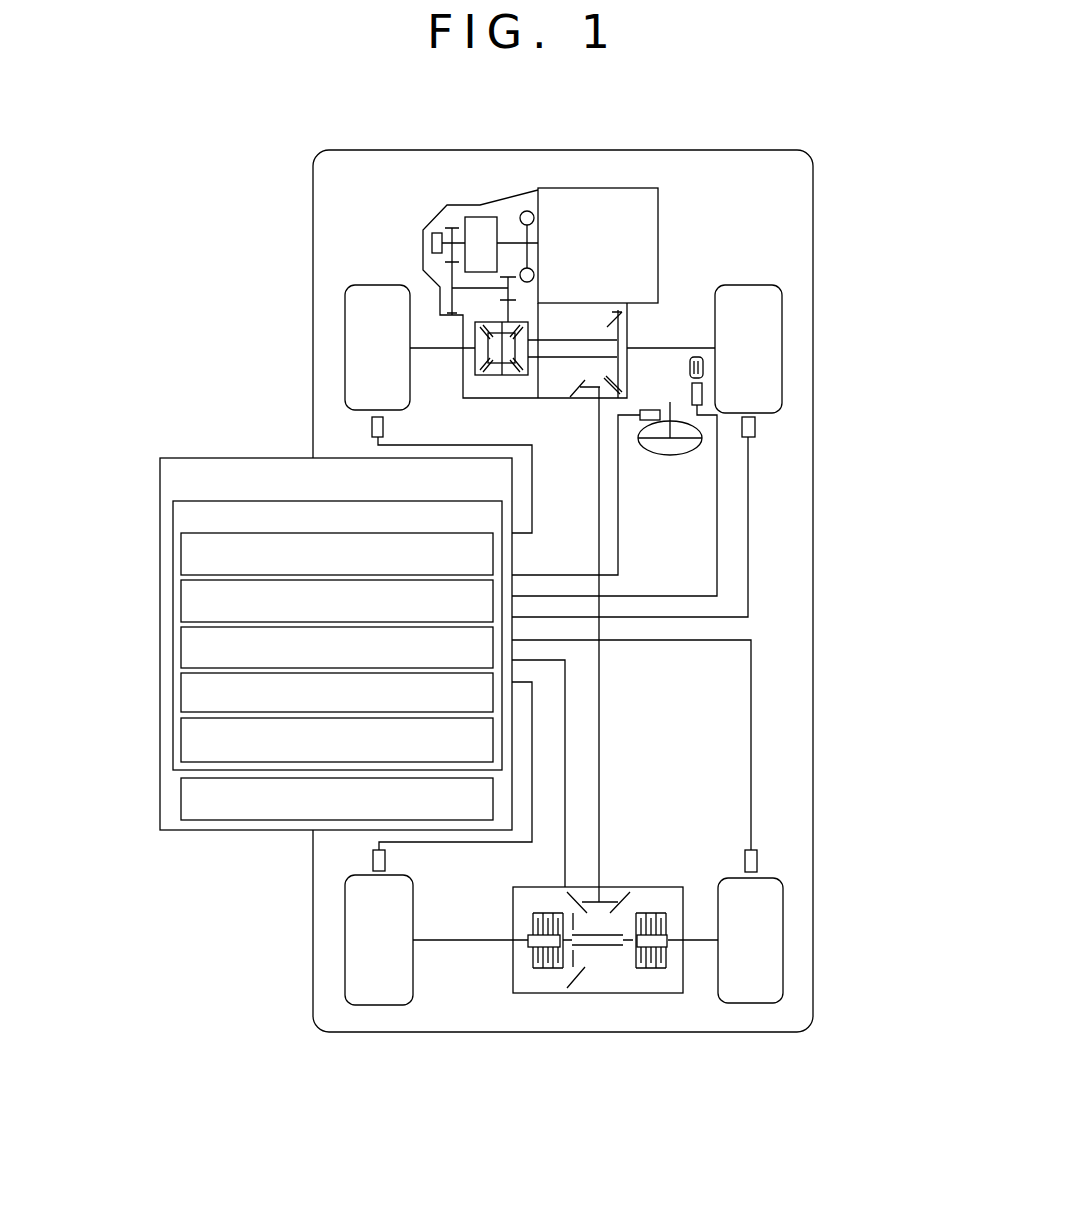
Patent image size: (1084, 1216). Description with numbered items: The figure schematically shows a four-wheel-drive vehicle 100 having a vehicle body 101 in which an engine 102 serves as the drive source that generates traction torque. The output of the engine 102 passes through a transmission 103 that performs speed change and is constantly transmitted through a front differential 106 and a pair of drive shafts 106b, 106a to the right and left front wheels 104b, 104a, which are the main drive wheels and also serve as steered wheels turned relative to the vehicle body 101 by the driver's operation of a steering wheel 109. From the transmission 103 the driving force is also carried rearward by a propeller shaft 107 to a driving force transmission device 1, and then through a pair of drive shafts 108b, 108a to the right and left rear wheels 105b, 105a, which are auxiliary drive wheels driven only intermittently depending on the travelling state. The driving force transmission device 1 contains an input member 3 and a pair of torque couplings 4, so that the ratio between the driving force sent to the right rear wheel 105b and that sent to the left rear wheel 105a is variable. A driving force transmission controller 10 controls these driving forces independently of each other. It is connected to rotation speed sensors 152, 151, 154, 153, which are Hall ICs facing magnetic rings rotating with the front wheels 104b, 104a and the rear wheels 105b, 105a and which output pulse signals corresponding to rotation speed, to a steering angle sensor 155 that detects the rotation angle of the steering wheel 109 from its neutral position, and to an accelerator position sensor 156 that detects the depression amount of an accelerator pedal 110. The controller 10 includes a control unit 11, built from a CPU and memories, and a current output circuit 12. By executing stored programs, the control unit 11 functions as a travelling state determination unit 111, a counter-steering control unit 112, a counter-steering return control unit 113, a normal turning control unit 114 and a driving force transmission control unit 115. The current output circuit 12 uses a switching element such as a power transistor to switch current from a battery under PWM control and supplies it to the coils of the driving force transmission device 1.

The four-wheel-drive vehicle 100 is at (343, 128).
The vehicle body 101 is at (720, 150).
The engine 102 is at (623, 188).
The transmission 103 is at (497, 208).
The left front wheel 104a is at (345, 330).
The right front wheel 104b is at (782, 330).
The left rear wheel 105a is at (345, 940).
The right rear wheel 105b is at (783, 927).
The front differential 106 is at (490, 380).
The left front drive shaft 106a is at (443, 352).
The right front drive shaft 106b is at (678, 348).
The propeller shaft 107 is at (600, 737).
The left rear drive shaft 108a is at (455, 938).
The right rear drive shaft 108b is at (705, 938).
The steering wheel 109 is at (670, 458).
The accelerator pedal 110 is at (703, 368).
The driving force transmission device 1 is at (597, 980).
The input member 3 is at (610, 978).
The torque couplings 4 is at (537, 978).
The driving force transmission controller 10 is at (306, 625).
The control unit 11 is at (301, 635).
The current output circuit 12 is at (181, 797).
The travelling state determination unit 111 is at (181, 552).
The counter-steering control unit 112 is at (181, 598).
The counter-steering return control unit 113 is at (181, 645).
The normal turning control unit 114 is at (181, 690).
The driving force transmission control unit 115 is at (181, 737).
The rotation speed sensor 151 is at (372, 427).
The rotation speed sensor 152 is at (755, 427).
The rotation speed sensor 153 is at (373, 860).
The rotation speed sensor 154 is at (757, 860).
The steering angle sensor 155 is at (650, 410).
The accelerator position sensor 156 is at (702, 393).